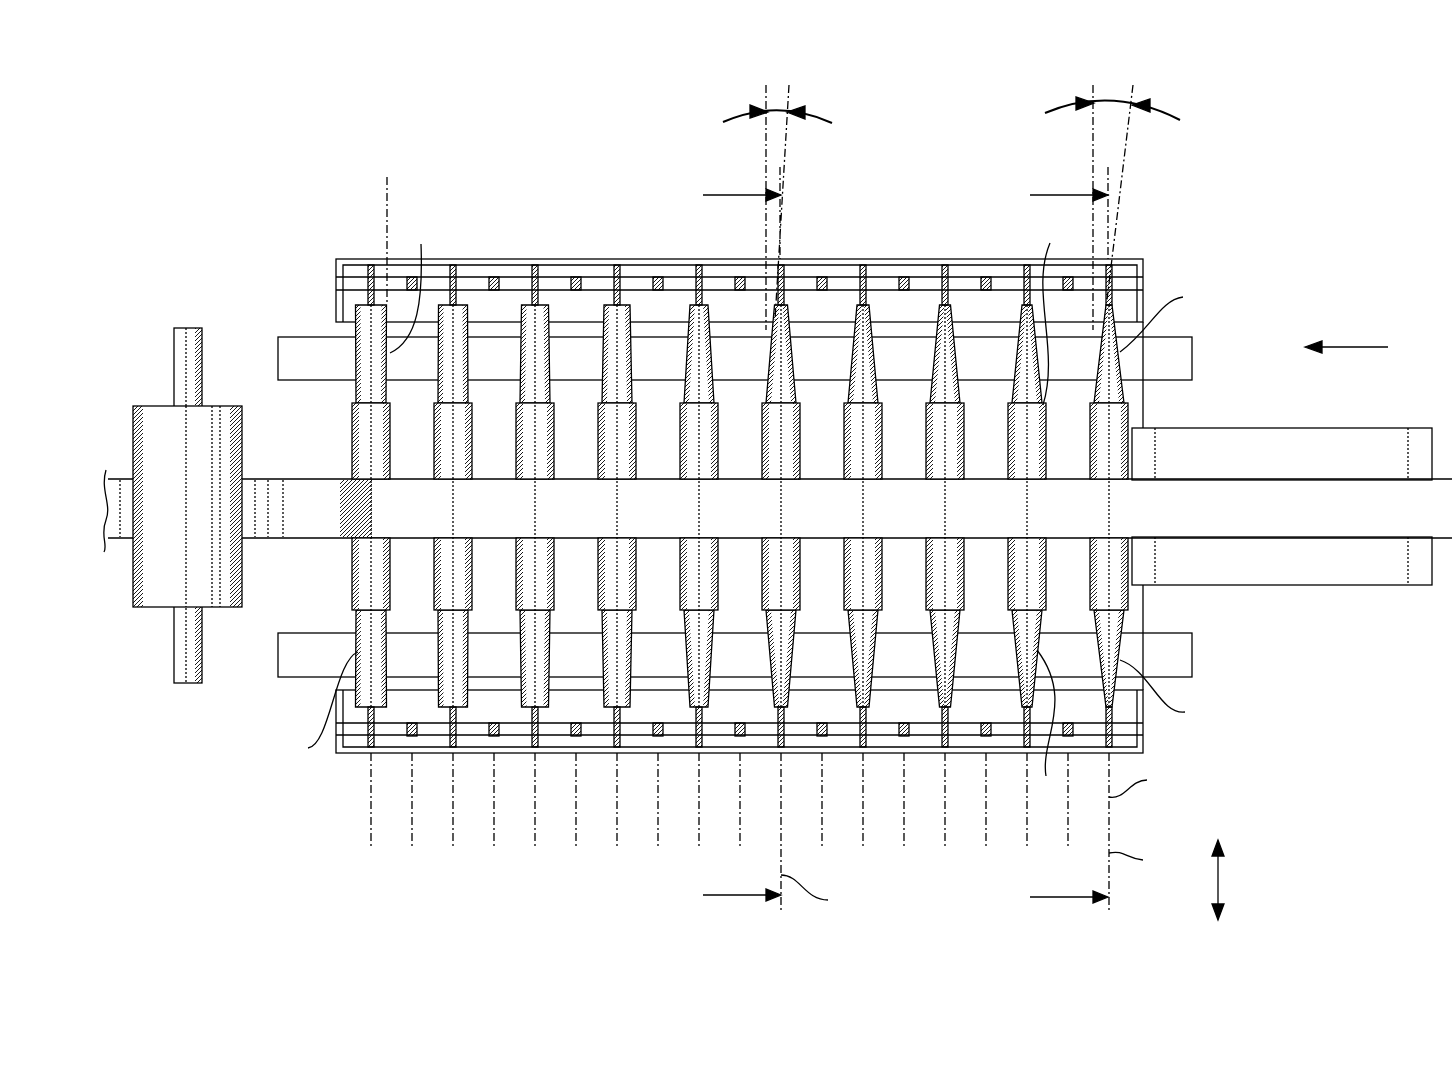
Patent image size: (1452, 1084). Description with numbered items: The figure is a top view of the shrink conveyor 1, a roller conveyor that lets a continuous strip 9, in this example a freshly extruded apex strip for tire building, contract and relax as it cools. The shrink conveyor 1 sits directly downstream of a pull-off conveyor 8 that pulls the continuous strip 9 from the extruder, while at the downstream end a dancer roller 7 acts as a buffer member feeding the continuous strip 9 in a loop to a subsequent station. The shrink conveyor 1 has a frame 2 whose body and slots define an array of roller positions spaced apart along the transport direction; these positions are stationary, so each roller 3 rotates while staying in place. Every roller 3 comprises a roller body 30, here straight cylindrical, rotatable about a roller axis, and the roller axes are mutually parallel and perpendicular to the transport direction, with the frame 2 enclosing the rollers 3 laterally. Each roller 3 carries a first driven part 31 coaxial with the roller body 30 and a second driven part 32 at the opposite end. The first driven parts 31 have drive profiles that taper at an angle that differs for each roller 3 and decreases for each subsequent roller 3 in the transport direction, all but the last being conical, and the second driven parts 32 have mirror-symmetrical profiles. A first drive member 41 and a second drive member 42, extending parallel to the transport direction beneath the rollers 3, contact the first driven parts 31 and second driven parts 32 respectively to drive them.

The shrink conveyor 1 is at (183, 185).
The frame 2 is at (557, 290).
The roller 3 is at (764, 482).
The dancer roller 7 is at (148, 598).
The pull-off conveyor 8 is at (1330, 563).
The continuous strip 9 is at (122, 488).
The roller body 30 is at (1171, 506).
The first driven part 31 is at (1120, 376).
The second driven part 32 is at (1120, 650).
The first drive member 41 is at (293, 357).
The second drive member 42 is at (290, 652).